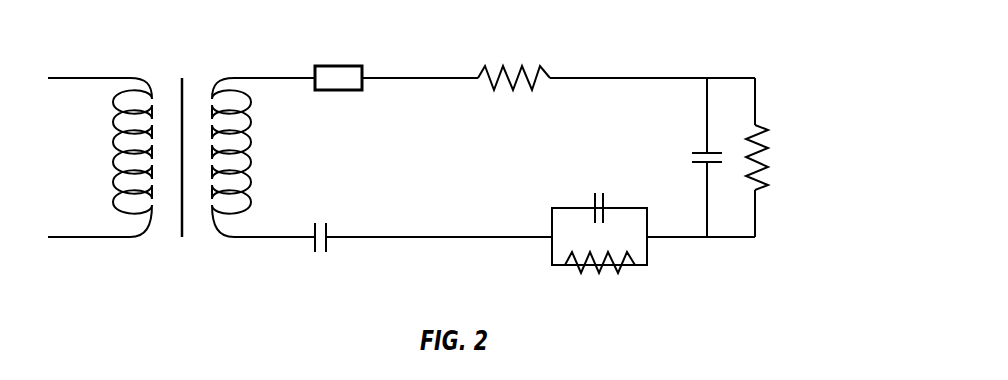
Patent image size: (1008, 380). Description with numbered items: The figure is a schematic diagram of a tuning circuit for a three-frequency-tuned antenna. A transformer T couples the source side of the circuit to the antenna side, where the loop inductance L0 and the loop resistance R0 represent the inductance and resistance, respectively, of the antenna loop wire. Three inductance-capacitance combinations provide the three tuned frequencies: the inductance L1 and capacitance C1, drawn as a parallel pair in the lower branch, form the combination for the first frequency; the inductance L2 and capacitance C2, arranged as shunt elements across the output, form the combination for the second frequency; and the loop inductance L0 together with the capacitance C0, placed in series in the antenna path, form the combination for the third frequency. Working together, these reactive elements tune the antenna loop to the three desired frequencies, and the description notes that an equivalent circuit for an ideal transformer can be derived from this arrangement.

The transformer T is at (180, 157).
The resistance of antenna loop wire R0 is at (346, 60).
The inductance of antenna loop wire L0 is at (522, 60).
The capacitance for third frequency C0 is at (327, 255).
The inductance for first frequency L1 is at (600, 195).
The capacitance for first frequency C1 is at (599, 279).
The capacitance for second frequency C2 is at (642, 157).
The inductance for second frequency L2 is at (812, 157).